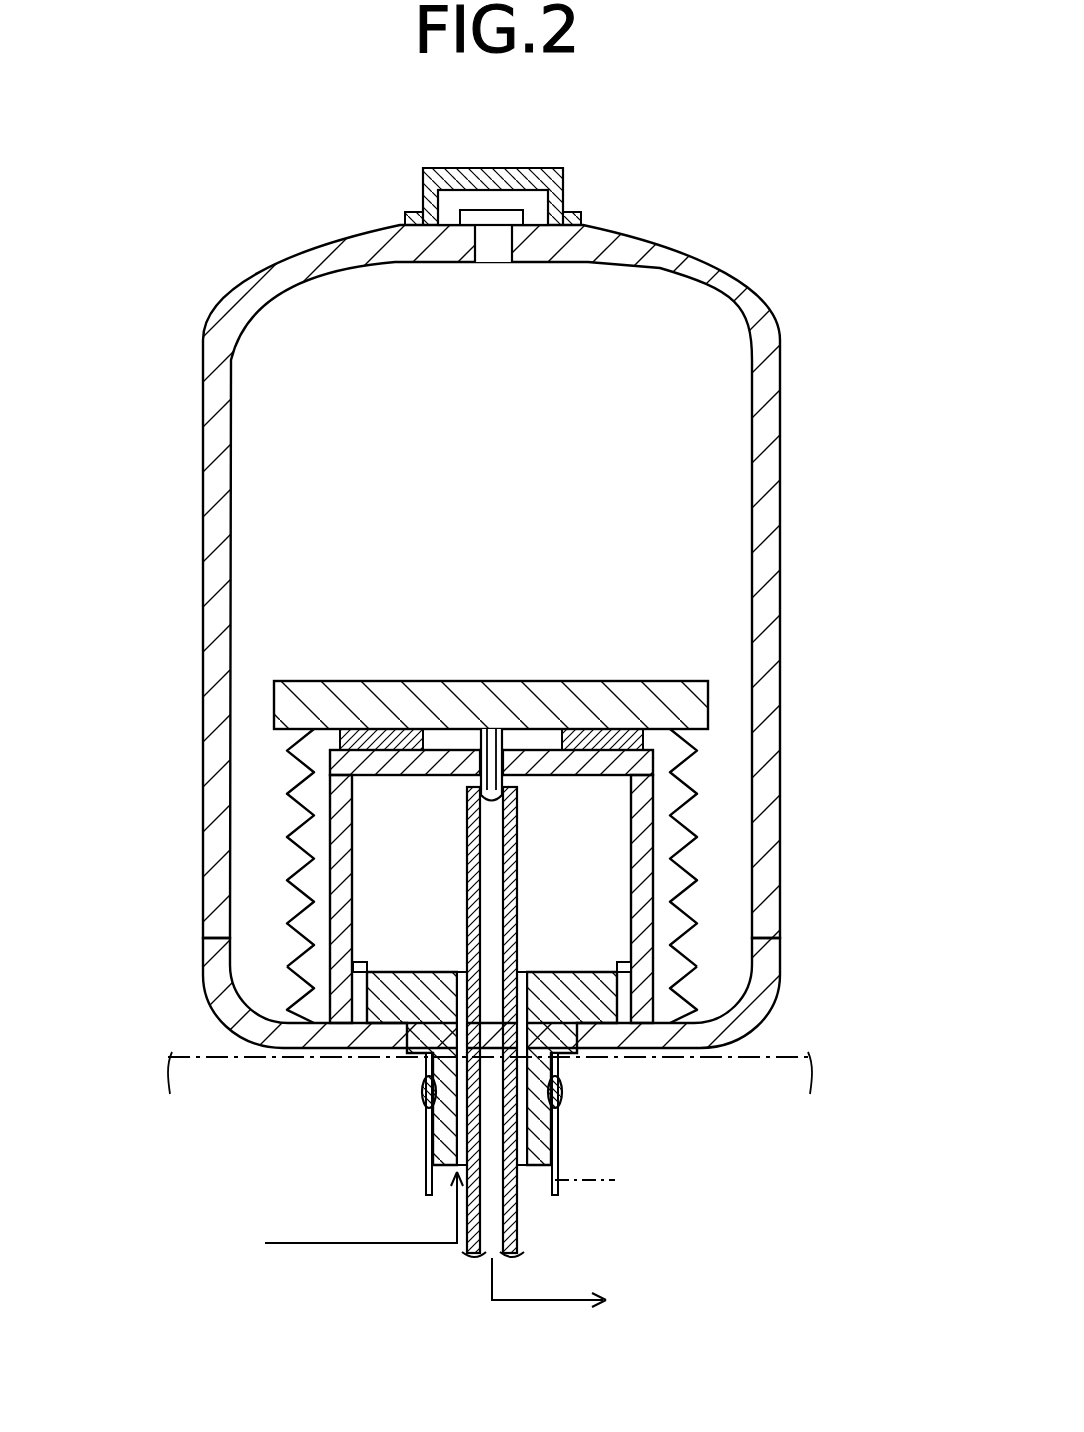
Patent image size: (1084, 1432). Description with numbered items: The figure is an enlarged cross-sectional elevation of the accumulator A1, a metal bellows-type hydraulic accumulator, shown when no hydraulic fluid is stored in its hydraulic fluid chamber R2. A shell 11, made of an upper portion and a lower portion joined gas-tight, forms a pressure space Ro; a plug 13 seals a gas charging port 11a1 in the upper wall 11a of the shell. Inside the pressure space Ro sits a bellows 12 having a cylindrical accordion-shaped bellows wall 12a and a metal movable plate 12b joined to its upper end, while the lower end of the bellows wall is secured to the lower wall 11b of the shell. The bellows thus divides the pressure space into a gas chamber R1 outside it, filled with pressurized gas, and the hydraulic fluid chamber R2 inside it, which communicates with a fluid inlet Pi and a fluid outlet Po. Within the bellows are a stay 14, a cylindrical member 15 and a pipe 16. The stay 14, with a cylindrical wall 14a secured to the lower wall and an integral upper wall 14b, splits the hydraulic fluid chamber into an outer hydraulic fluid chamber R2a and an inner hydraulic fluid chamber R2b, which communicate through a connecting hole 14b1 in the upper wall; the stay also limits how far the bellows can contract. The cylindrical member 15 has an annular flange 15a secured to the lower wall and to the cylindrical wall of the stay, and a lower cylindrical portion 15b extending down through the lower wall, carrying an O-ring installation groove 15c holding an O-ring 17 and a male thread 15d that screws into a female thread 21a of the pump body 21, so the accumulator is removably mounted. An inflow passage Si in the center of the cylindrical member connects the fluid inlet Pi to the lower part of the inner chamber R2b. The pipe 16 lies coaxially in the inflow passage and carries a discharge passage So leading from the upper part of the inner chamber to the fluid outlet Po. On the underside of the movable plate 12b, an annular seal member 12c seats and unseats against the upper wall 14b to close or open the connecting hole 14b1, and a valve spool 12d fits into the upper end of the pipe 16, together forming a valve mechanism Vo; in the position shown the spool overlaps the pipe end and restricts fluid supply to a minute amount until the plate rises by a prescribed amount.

The accumulator A1 is at (756, 258).
The shell 11 is at (452, 643).
The upper wall 11a is at (612, 243).
The gas charging port 11a1 is at (500, 245).
The lower wall 11b is at (655, 1035).
The bellows 12 is at (564, 829).
The bellows wall 12a is at (700, 906).
The movable plate 12b is at (510, 700).
The annular seal member 12c is at (592, 740).
The valve spool 12d is at (495, 778).
The plug 13 is at (488, 238).
The stay 14 is at (381, 816).
The cylindrical wall 14a is at (340, 895).
The upper wall 14b is at (388, 745).
The connecting hole 14b1 is at (470, 760).
The cylindrical member 15 is at (463, 1098).
The annular flange 15a is at (380, 1010).
The lower cylindrical portion 15b is at (435, 1190).
The O-ring installation groove 15c is at (433, 1118).
The male thread 15d is at (433, 1162).
The pipe 16 is at (522, 865).
The O-ring 17 is at (566, 1098).
The pump body 21 is at (790, 1047).
The female thread 21a is at (616, 1184).
The gas chamber R1 is at (245, 468).
The hydraulic fluid chamber R2 is at (320, 825).
The outer hydraulic fluid chamber R2a is at (320, 802).
The inner hydraulic fluid chamber R2b is at (365, 945).
The pressure space Ro is at (740, 514).
The valve mechanism Vo is at (456, 805).
The discharge passage So is at (456, 875).
The inflow passage Si is at (524, 975).
The fluid outlet Po is at (488, 1255).
The fluid inlet Pi is at (520, 1172).